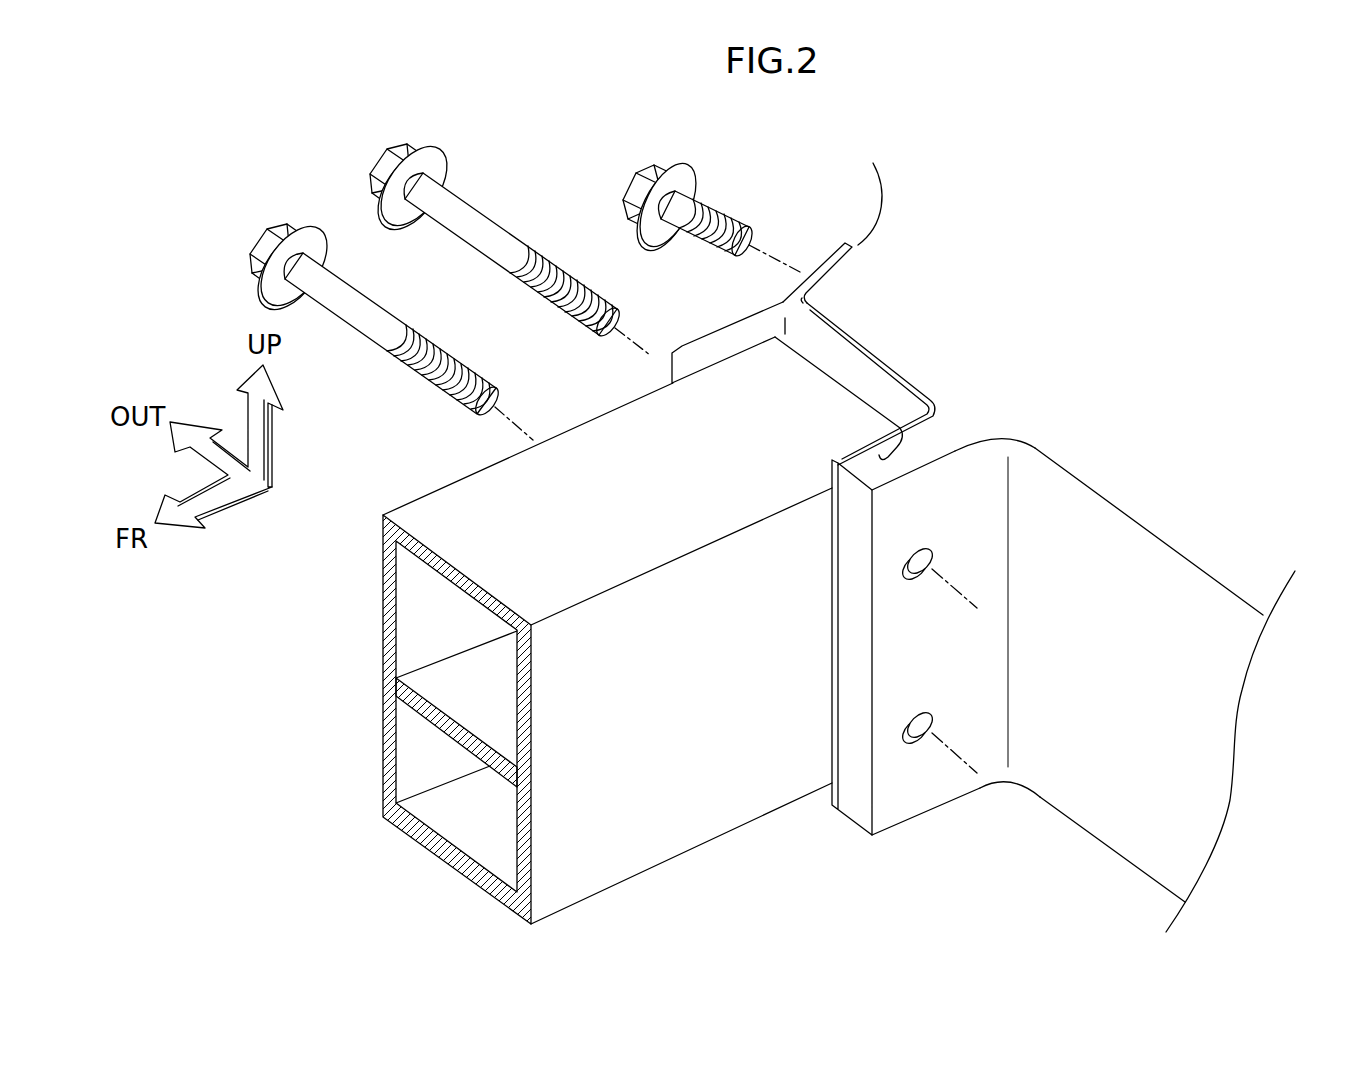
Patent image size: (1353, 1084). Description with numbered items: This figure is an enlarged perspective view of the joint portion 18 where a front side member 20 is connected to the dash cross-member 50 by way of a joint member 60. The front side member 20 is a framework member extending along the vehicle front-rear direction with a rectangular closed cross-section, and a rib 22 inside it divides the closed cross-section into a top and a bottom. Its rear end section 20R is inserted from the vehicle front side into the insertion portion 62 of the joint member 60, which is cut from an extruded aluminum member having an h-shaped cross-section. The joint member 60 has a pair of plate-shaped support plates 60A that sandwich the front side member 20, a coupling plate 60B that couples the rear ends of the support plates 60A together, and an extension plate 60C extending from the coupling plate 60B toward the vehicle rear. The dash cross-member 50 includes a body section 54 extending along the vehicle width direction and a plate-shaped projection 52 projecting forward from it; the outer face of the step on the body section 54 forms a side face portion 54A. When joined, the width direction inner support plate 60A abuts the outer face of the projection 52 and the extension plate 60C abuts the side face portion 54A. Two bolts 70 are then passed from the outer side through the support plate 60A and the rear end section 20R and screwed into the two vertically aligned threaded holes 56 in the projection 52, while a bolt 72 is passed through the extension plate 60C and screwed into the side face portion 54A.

The mounting bracket assembly 18 is at (1048, 530).
The front side member 20 is at (578, 673).
The rear end section 20R is at (727, 795).
The rib 22 is at (457, 688).
The dash cross-member 50 is at (890, 683).
The projection 52 is at (953, 708).
The body section 54 is at (1134, 809).
The side face portion 54A is at (833, 232).
The threaded hole 56 is at (922, 742).
The joint member 60 is at (802, 327).
The support plate 60A is at (745, 317).
The coupling plate 60B is at (873, 353).
The extension plate 60C is at (822, 267).
The insertion portion 62 is at (715, 347).
The bolt 70 is at (320, 243).
The bolt 72 is at (628, 185).